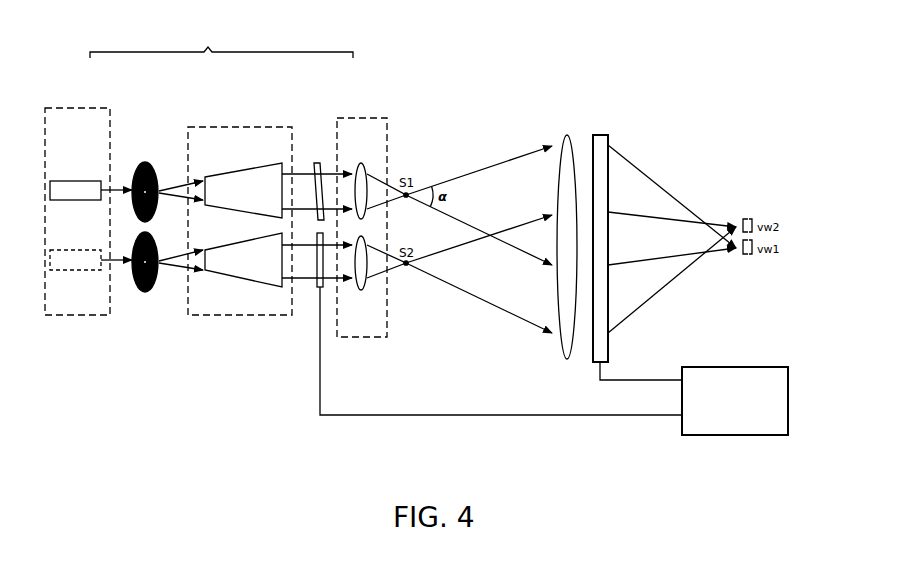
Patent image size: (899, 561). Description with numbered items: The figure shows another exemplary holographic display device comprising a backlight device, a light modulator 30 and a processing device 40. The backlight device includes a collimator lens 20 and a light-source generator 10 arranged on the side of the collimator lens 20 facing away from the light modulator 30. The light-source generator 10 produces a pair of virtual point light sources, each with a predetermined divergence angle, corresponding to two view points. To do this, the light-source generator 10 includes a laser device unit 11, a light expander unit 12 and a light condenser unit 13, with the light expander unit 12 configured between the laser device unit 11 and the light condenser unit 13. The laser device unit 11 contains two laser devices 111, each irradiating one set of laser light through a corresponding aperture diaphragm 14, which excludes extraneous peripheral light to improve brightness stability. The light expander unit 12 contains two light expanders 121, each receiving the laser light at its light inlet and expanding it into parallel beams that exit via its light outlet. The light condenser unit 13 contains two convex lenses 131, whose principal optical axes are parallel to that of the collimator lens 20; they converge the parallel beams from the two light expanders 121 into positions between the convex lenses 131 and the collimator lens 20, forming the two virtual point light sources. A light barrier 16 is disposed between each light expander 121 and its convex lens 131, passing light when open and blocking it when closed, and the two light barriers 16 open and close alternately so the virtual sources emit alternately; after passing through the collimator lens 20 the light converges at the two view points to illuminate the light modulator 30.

The light-source generator 10 is at (221, 44).
The laser device unit 11 is at (68, 107).
The laser device 111 is at (63, 181).
The aperture diaphragm 14 is at (146, 163).
The light expander unit 12 is at (222, 127).
The light expander 121 is at (247, 173).
The light barrier 16 is at (318, 162).
The light condenser unit 13 is at (349, 118).
The convex lens 131 is at (364, 163).
The collimator lens 20 is at (569, 136).
The light modulator 30 is at (600, 135).
The processing device 40 is at (788, 380).